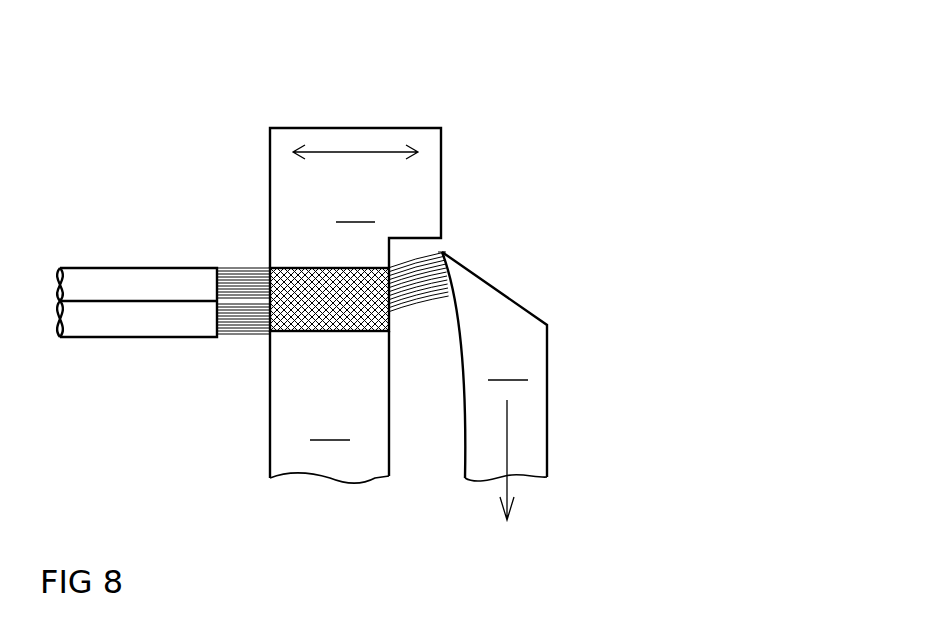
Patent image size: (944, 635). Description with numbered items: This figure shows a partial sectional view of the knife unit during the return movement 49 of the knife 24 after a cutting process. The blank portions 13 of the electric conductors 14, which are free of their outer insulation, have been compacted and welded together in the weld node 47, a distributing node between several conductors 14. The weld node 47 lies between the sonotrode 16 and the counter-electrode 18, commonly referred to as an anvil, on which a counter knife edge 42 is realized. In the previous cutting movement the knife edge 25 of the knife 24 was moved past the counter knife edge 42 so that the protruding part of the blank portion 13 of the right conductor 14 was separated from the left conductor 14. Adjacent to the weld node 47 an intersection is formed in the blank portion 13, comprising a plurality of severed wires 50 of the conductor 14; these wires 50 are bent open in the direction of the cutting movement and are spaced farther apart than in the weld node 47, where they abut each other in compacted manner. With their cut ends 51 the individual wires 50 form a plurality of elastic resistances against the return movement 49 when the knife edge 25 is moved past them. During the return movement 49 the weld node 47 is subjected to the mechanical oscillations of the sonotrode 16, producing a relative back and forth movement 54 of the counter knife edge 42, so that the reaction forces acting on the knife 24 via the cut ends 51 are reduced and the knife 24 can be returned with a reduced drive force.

The blank portions 13 is at (247, 283).
The electric conductors 14 is at (117, 280).
The sonotrode 16 is at (329, 407).
The counter-electrode 18 is at (355, 198).
The knife 24 is at (494, 366).
The knife edge 25 is at (442, 252).
The counter knife edge 42 is at (417, 272).
The weld node 47 is at (327, 320).
The return movement 49 is at (507, 452).
The wires 50 is at (415, 295).
The cut ends 51 is at (448, 296).
The back and forth movement 54 is at (355, 152).